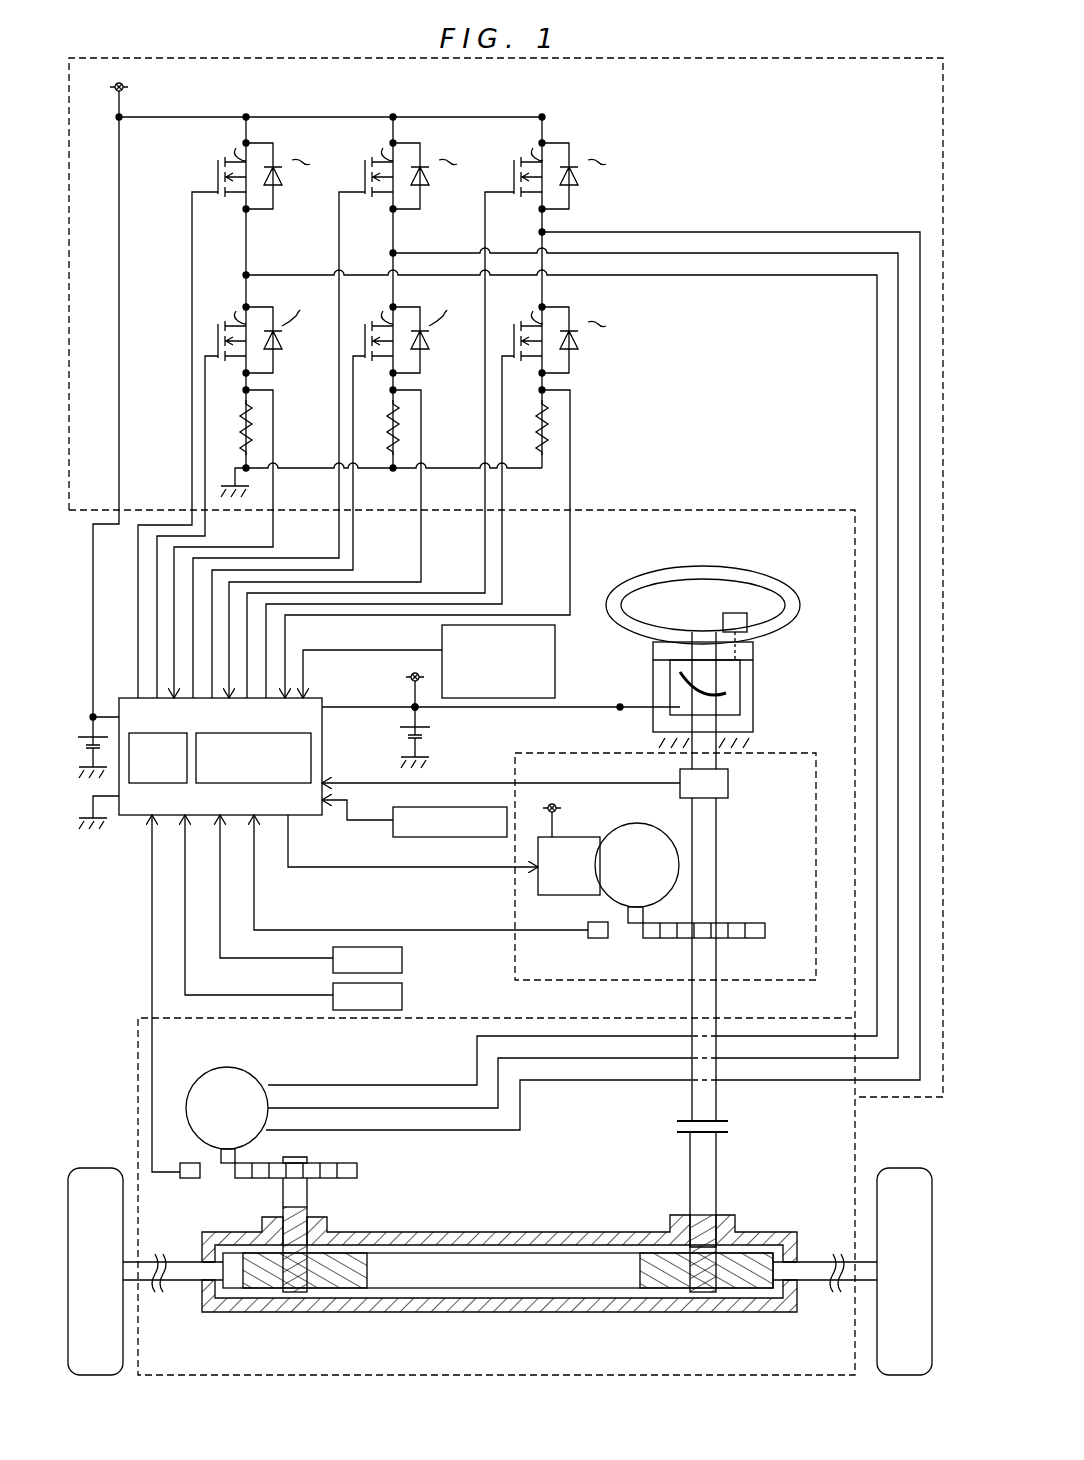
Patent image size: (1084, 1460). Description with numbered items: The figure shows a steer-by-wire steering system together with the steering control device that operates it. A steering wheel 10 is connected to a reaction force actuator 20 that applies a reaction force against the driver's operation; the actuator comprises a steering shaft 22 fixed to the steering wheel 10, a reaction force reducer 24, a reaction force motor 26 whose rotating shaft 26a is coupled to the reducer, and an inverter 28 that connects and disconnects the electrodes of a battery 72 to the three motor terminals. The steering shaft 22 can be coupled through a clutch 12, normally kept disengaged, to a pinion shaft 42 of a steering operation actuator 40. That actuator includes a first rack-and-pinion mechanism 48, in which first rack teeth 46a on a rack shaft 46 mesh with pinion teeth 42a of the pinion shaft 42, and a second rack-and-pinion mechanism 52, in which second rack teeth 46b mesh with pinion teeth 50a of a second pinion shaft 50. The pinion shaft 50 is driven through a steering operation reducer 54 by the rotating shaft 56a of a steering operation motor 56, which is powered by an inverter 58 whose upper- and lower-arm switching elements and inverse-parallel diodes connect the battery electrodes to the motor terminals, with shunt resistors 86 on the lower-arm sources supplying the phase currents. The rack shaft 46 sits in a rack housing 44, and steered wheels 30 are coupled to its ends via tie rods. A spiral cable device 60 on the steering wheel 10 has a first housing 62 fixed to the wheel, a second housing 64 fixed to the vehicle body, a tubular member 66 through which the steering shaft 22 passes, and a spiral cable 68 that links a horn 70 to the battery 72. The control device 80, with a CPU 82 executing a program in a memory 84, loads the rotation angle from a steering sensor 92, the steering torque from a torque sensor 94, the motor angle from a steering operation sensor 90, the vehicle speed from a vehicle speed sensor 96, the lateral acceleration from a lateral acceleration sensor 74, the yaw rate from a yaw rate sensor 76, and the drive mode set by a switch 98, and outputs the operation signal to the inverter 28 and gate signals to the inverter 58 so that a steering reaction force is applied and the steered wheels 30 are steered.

The steering wheel 10 is at (799, 600).
The clutch 12 is at (742, 1126).
The reaction force actuator 20 is at (800, 740).
The steering shaft 22 is at (718, 848).
The reaction force reducer 24 is at (746, 923).
The reaction force motor 26 is at (634, 830).
The rotating shaft 26a is at (638, 938).
The inverter 28 is at (573, 837).
The steered wheels 30 is at (95, 1168).
The steering operation actuator 40 is at (789, 58).
The pinion shaft 42 is at (718, 1168).
The pinion teeth 42a is at (718, 1202).
The rack housing 44 is at (774, 1224).
The rack shaft 46 is at (581, 1298).
The first rack teeth 46a is at (748, 1296).
The second rack teeth 46b is at (360, 1302).
The first rack-and-pinion mechanism 48 is at (712, 1282).
The pinion shaft 50 is at (286, 1198).
The pinion teeth 50a is at (310, 1212).
The second rack-and-pinion mechanism 52 is at (308, 1267).
The steering operation reducer 54 is at (328, 1162).
The steering operation motor 56 is at (238, 1068).
The rotating shaft 56a is at (230, 1180).
The inverter 58 is at (529, 596).
The spiral cable device 60 is at (752, 687).
The first housing 62 is at (756, 650).
The second housing 64 is at (754, 705).
The tubular member 66 is at (750, 727).
The spiral cable 68 is at (740, 690).
The horn 70 is at (723, 606).
The battery 72 is at (86, 724).
The lateral acceleration sensor 74 is at (404, 958).
The yaw rate sensor 76 is at (404, 995).
The control device 80 is at (250, 756).
The CPU 82 is at (150, 733).
The memory 84 is at (253, 733).
The shunt resistors 86 is at (238, 423).
The steering operation sensor 90 is at (176, 1180).
The steering sensor 92 is at (594, 940).
The torque sensor 94 is at (730, 784).
The vehicle speed sensor 96 is at (557, 656).
The switch 98 is at (440, 840).